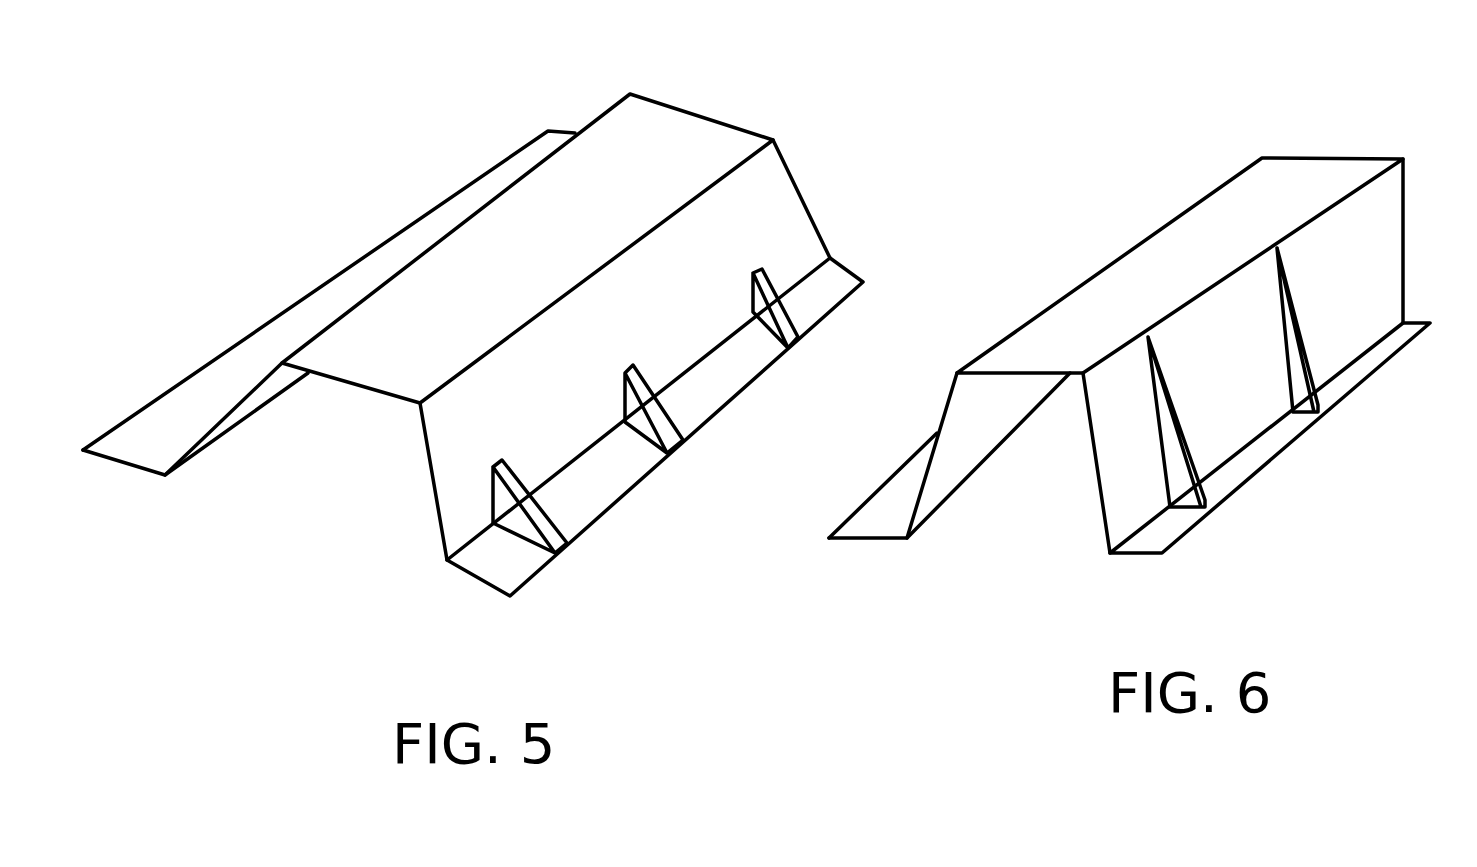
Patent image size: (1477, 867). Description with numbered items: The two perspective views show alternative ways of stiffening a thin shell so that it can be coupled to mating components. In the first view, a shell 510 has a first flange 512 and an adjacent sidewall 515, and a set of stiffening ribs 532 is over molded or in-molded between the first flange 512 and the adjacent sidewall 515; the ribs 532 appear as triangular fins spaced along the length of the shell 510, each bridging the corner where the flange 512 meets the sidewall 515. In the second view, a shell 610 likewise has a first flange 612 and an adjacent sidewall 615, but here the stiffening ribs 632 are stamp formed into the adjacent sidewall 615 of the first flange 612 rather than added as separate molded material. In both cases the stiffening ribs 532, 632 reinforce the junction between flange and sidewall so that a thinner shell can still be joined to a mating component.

In FIG. 5, the shell 510 is at (385, 108).
In FIG. 5, the first flange 512 is at (832, 285).
In FIG. 5, the adjacent sidewall 515 is at (465, 485).
In FIG. 5, the stiffening ribs 532 is at (518, 523).
In FIG. 6, the shell 610 is at (1035, 133).
In FIG. 6, the first flange 612 is at (1398, 345).
In FIG. 6, the adjacent sidewall 615 is at (1110, 448).
In FIG. 6, the stiffening ribs 632 is at (1180, 465).